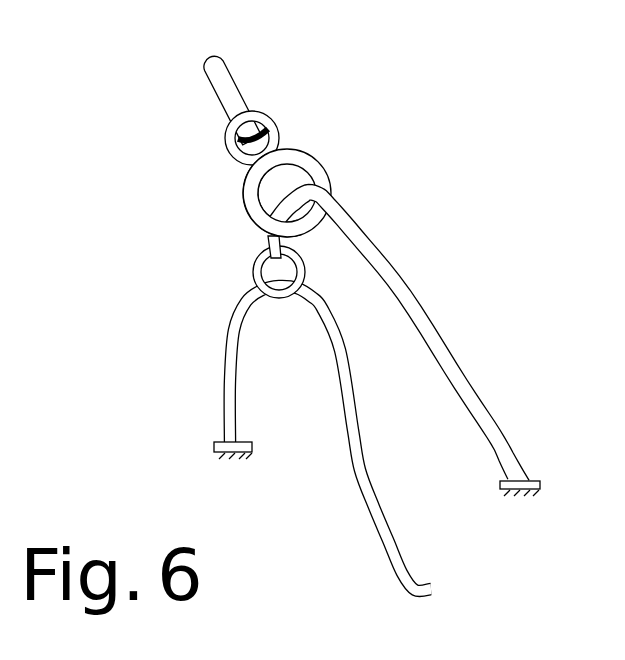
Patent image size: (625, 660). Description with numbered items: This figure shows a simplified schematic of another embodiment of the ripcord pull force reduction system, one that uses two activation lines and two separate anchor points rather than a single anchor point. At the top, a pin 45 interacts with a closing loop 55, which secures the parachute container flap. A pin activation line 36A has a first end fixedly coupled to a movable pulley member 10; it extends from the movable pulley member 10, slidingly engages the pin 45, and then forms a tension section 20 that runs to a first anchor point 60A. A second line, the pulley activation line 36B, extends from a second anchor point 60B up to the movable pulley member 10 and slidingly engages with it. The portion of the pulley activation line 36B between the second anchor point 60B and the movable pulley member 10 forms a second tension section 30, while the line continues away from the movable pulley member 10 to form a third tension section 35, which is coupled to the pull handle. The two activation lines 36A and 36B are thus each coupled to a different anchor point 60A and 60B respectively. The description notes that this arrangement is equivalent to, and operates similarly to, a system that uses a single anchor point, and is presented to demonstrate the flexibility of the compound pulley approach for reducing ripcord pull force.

The movable pulley member 10 is at (255, 255).
The first strap 20 is at (473, 370).
The second tension section 30 is at (230, 350).
The third tension section 35 is at (337, 360).
The pin activation line 36A is at (402, 265).
The pulley activation line 36B is at (400, 568).
The pin 45 is at (240, 72).
The closing loop 55 is at (238, 130).
The first anchor point 60A is at (540, 477).
The second anchor point 60B is at (213, 443).